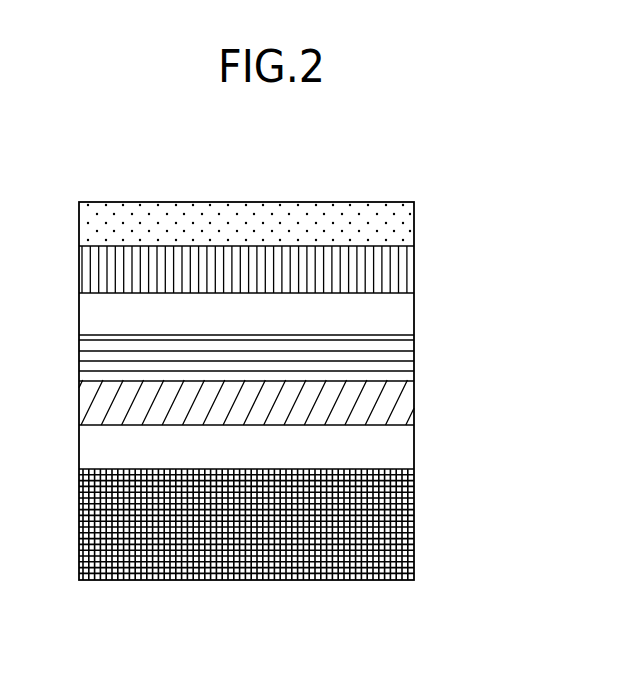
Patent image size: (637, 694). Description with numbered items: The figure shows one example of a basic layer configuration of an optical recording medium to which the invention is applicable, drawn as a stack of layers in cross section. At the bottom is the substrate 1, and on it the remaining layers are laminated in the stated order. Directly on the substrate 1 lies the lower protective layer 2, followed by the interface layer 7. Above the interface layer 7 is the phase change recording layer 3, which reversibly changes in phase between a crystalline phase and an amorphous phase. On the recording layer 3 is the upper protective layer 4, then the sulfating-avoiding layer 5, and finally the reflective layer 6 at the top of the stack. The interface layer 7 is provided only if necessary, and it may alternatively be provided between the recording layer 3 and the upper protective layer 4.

The substrate 1 is at (414, 521).
The lower protective layer 2 is at (414, 445).
The phase change recording layer 3 is at (414, 356).
The upper protective layer 4 is at (414, 311).
The sulfating-avoiding layer 5 is at (414, 266).
The reflective layer 6 is at (414, 220).
The interface layer 7 is at (414, 400).